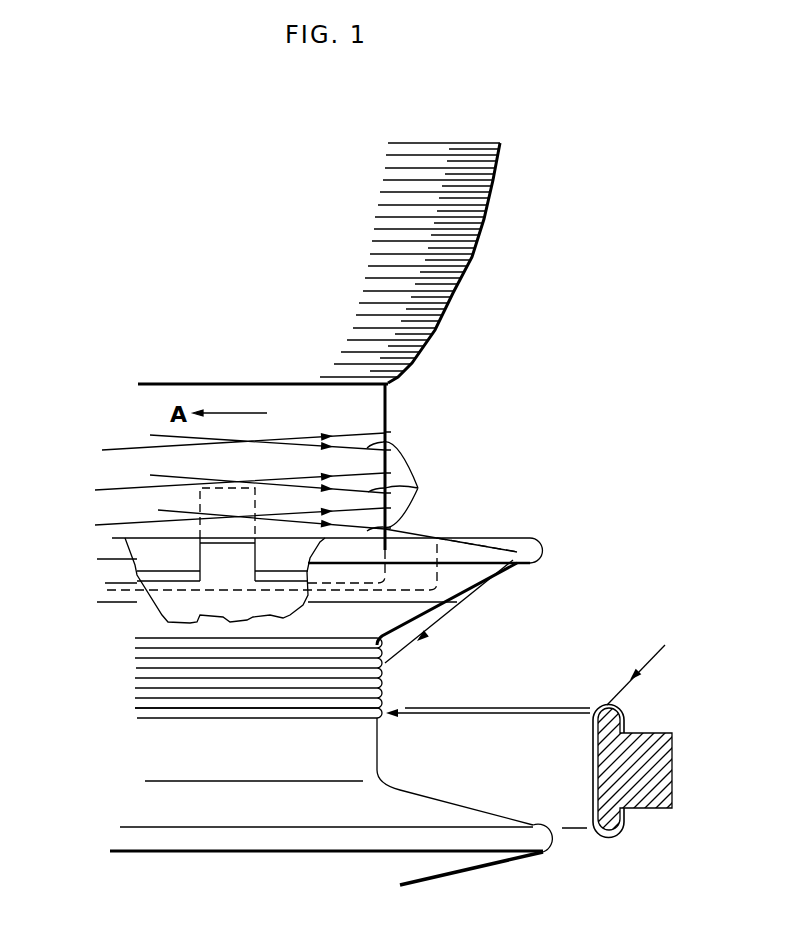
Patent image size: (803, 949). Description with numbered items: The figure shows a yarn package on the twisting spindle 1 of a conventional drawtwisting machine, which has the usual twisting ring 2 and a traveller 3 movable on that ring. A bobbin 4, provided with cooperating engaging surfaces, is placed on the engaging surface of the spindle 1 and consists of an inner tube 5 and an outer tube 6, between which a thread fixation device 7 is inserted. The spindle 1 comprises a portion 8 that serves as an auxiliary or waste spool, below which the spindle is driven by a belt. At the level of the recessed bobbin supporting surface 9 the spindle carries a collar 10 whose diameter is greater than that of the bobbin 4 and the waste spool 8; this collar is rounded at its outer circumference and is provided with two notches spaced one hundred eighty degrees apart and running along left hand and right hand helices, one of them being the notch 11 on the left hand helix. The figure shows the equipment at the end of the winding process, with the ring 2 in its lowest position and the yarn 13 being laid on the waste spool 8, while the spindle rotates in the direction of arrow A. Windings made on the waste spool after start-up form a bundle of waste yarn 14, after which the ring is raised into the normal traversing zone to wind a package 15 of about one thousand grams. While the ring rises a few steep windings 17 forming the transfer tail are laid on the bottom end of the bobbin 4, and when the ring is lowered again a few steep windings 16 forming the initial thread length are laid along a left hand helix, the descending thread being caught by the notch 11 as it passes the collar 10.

The twisting spindle 1 is at (120, 810).
The twisting ring 2 is at (612, 778).
The traveller 3 is at (592, 755).
The bobbin 4 is at (372, 409).
The inner tube 5 is at (145, 575).
The outer tube 6 is at (175, 560).
The thread fixation device 7 is at (235, 570).
The waste spool portion 8 is at (337, 710).
The recessed bobbin supporting surface 9 is at (183, 590).
The collar 10 is at (470, 578).
The notch 11 is at (547, 544).
The yarn 13 is at (513, 717).
The bundle of waste yarn 14 is at (383, 684).
The package 15 is at (474, 234).
The steep windings forming initial thread length 16 is at (406, 486).
The steep windings forming transfer tail 17 is at (95, 448).